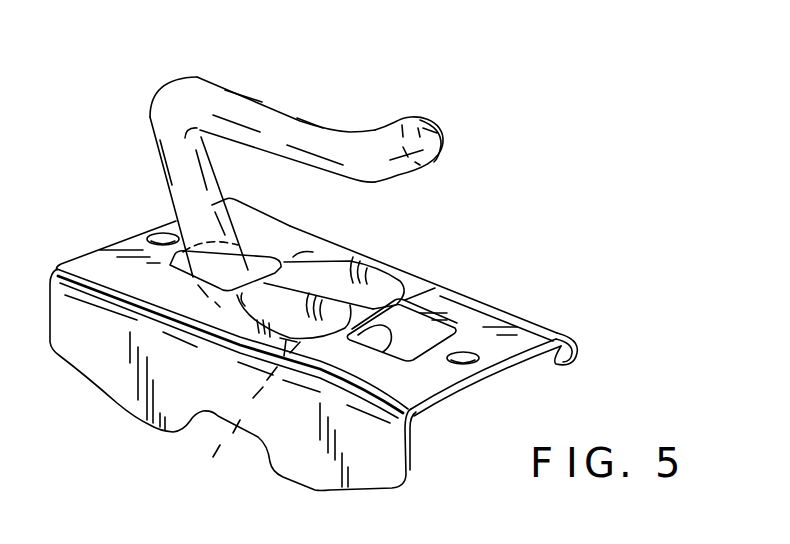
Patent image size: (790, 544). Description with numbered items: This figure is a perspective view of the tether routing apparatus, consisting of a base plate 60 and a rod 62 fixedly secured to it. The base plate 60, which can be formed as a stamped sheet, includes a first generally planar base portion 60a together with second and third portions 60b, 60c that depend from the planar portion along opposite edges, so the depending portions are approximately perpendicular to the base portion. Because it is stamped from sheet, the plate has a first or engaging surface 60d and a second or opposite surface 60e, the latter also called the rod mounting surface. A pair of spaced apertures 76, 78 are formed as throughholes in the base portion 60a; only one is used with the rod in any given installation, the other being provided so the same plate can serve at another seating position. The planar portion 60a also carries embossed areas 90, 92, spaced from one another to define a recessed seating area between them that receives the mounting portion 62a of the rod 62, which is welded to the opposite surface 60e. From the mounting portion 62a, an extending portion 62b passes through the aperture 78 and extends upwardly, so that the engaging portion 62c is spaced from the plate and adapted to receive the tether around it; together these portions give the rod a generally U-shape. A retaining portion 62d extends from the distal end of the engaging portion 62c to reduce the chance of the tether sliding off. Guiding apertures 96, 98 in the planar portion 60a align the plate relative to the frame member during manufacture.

The base plate 60 is at (113, 242).
The first generally planar base portion 60a is at (490, 333).
The second portion 60b is at (302, 453).
The third portion 60c is at (577, 345).
The first or engaging surface 60d is at (427, 298).
The second or opposite surface 60e is at (448, 397).
The rod 62 is at (155, 105).
The mounting portion 62a is at (220, 445).
The extending portion 62b is at (173, 167).
The engaging portion 62c is at (280, 115).
The end or retaining portion 62d is at (425, 133).
The aperture 76 is at (433, 332).
The aperture 78 is at (267, 260).
The embossed area 90 is at (287, 317).
The embossed area 92 is at (340, 270).
The guiding aperture 96 is at (157, 233).
The guiding aperture 98 is at (467, 363).